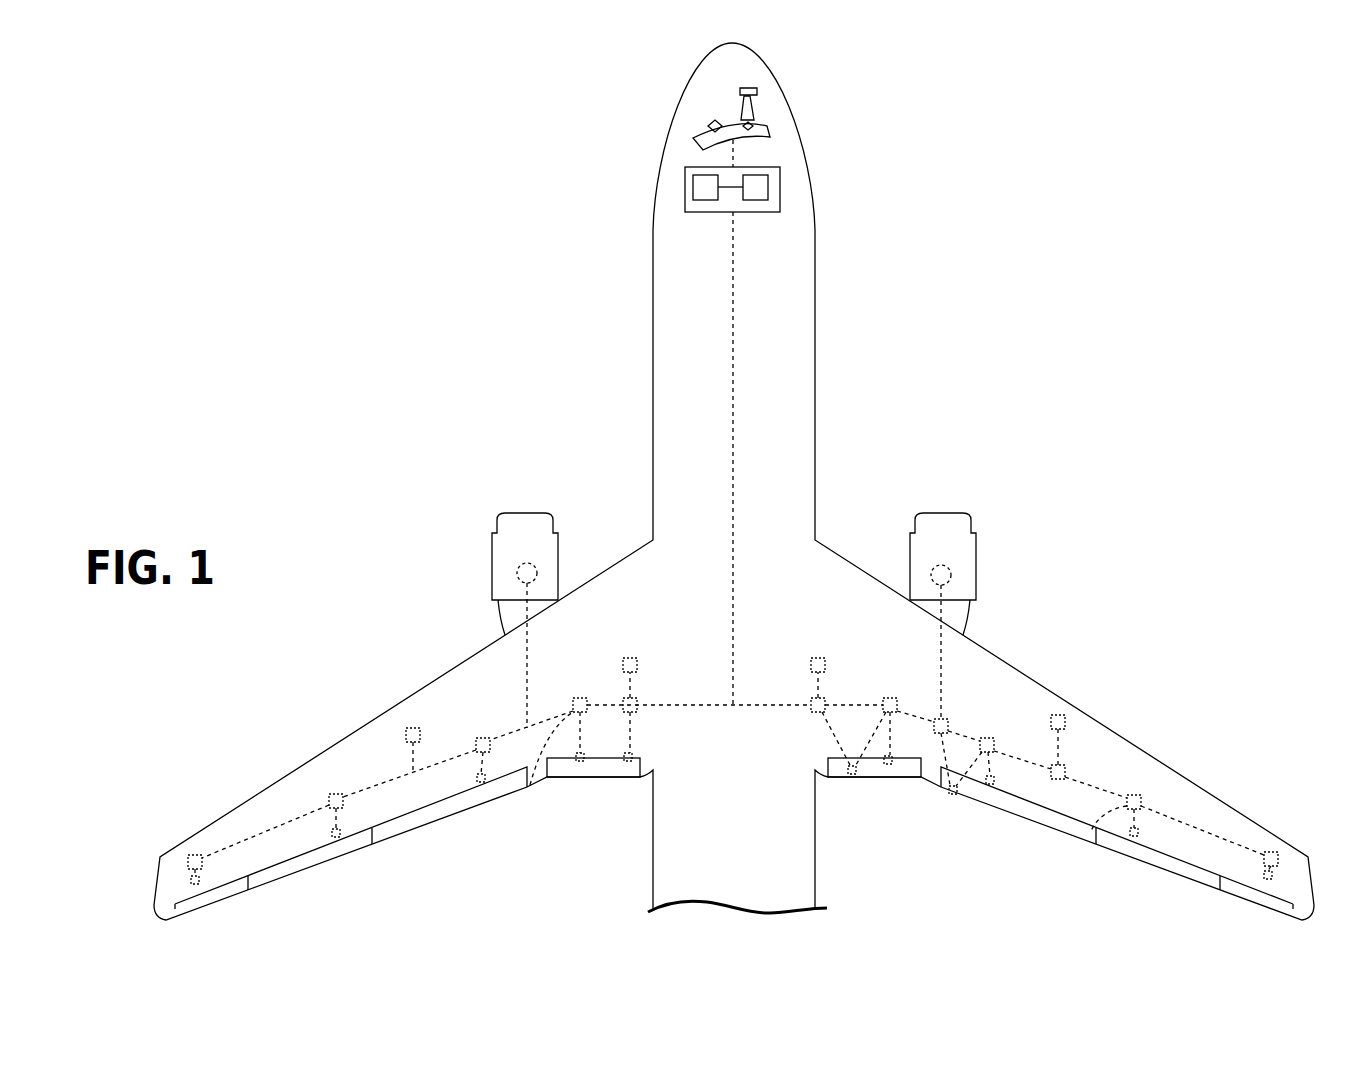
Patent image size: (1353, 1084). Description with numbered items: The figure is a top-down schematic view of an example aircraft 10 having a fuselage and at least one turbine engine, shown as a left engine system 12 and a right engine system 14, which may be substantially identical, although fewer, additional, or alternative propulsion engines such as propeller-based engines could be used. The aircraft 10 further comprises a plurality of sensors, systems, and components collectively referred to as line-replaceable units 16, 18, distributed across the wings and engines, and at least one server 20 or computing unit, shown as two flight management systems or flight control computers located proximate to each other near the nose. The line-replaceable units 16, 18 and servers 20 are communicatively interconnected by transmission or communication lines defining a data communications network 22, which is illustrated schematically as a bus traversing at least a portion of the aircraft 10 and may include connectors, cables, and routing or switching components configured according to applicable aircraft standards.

The aircraft 10 is at (540, 76).
The left engine system 12 is at (525, 523).
The right engine system 14 is at (955, 527).
The line-replaceable unit 16 is at (528, 790).
The line-replaceable unit 18 is at (540, 568).
The server 20 is at (703, 203).
The data communications network 22 is at (733, 395).